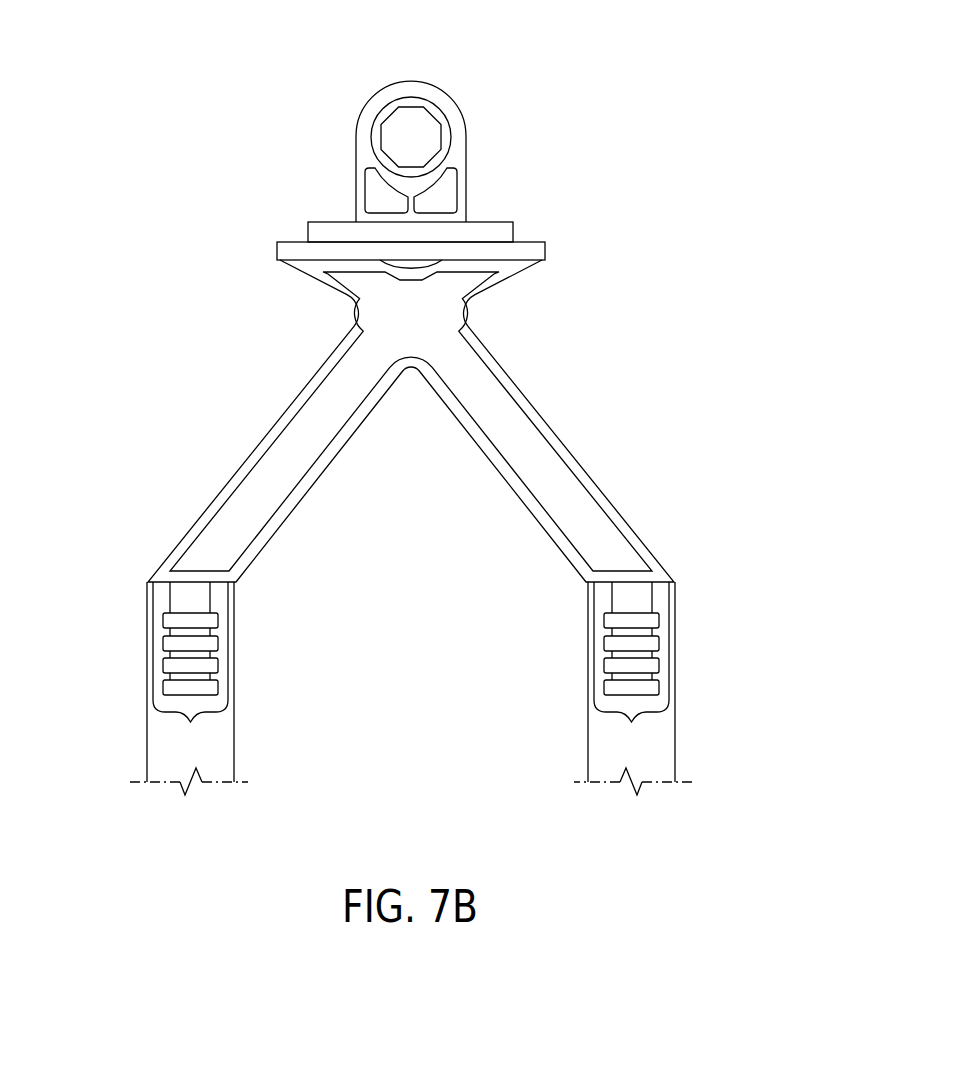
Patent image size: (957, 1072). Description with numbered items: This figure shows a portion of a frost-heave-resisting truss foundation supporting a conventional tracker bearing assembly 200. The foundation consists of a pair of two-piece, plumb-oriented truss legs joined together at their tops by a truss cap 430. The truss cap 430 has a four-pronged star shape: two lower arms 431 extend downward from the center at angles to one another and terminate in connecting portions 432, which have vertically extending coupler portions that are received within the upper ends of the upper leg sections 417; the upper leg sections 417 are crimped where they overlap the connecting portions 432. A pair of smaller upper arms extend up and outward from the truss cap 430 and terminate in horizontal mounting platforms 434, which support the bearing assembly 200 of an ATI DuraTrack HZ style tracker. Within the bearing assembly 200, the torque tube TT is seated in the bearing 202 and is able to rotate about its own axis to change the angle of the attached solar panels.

The bearing assembly 200 is at (508, 75).
The torque tube TT is at (413, 103).
The bearing 202 is at (450, 145).
The horizontal mounting platforms 434 is at (278, 253).
The truss cap 430 is at (225, 400).
The lower arms 431 is at (318, 477).
The connecting portions 432 is at (168, 655).
The upper leg sections 417 is at (147, 738).